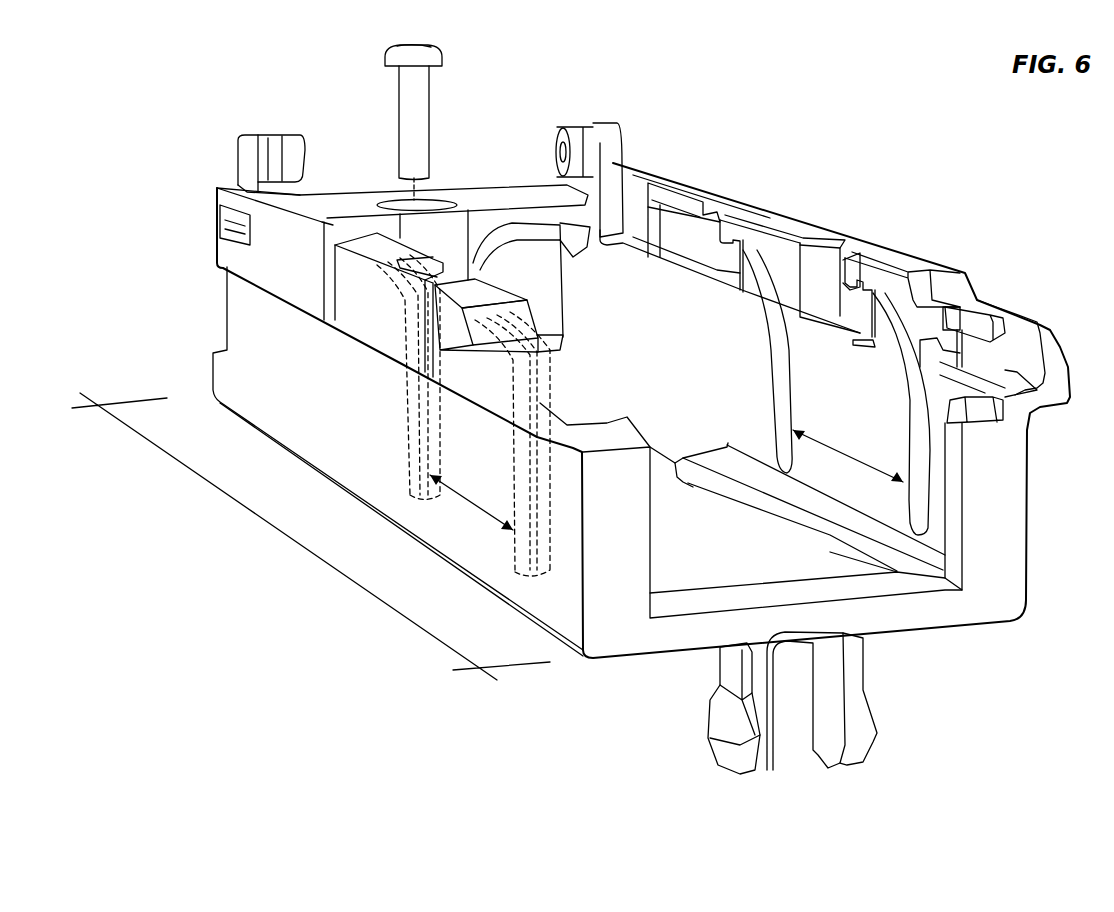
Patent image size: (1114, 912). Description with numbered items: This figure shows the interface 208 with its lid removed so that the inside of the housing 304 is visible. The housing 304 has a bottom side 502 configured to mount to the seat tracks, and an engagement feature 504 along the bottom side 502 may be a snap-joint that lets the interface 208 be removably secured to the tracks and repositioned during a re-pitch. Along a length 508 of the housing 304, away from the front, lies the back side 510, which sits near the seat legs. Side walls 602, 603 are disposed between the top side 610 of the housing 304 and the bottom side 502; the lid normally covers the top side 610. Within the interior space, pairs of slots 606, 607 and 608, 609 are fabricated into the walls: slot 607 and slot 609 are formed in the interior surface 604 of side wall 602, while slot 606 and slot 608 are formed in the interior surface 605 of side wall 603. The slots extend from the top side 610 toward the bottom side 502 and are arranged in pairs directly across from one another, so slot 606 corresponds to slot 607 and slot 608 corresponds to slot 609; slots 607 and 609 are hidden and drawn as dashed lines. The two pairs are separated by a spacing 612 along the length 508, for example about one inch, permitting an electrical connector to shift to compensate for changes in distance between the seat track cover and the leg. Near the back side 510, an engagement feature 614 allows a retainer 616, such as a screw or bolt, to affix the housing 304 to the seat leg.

The interface 208 is at (990, 157).
The housing 304 is at (300, 417).
The bottom side 502 is at (670, 677).
The engagement feature 504 is at (873, 778).
The length 508 is at (277, 530).
The back side 510 is at (192, 295).
The side wall 602 is at (623, 563).
The side wall 603 is at (1007, 540).
The interior surface 604 is at (532, 306).
The interior surface 605 is at (662, 327).
The slot 606 is at (912, 443).
The slot 607 is at (520, 543).
The slot 608 is at (775, 373).
The slot 609 is at (407, 467).
The top side 610 is at (705, 182).
The spacing 612 is at (473, 500).
The engagement feature 614 is at (438, 201).
The retainer 616 is at (430, 97).